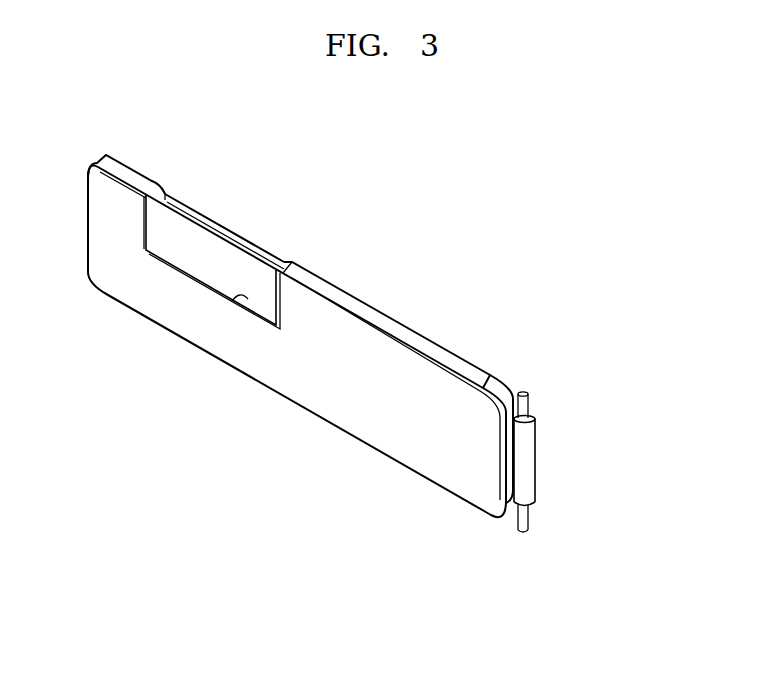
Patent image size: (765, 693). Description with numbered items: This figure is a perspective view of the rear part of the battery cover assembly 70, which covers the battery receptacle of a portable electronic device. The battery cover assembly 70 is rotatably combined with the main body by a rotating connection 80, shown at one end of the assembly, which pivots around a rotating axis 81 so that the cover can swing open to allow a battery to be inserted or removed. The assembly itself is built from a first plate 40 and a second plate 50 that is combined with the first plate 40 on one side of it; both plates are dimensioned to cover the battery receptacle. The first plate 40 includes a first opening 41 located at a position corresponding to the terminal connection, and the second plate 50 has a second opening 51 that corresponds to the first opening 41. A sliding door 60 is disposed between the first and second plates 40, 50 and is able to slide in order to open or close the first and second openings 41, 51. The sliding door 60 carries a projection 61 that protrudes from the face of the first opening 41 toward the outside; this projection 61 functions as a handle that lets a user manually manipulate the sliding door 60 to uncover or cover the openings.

The first plate 40 is at (155, 164).
The first opening 41 is at (164, 190).
The second plate 50 is at (111, 299).
The second opening 51 is at (237, 298).
The sliding door 60 is at (217, 274).
The projection 61 is at (241, 240).
The battery cover assembly 70 is at (590, 266).
The rotating connection 80 is at (547, 439).
The rotating axis 81 is at (524, 391).